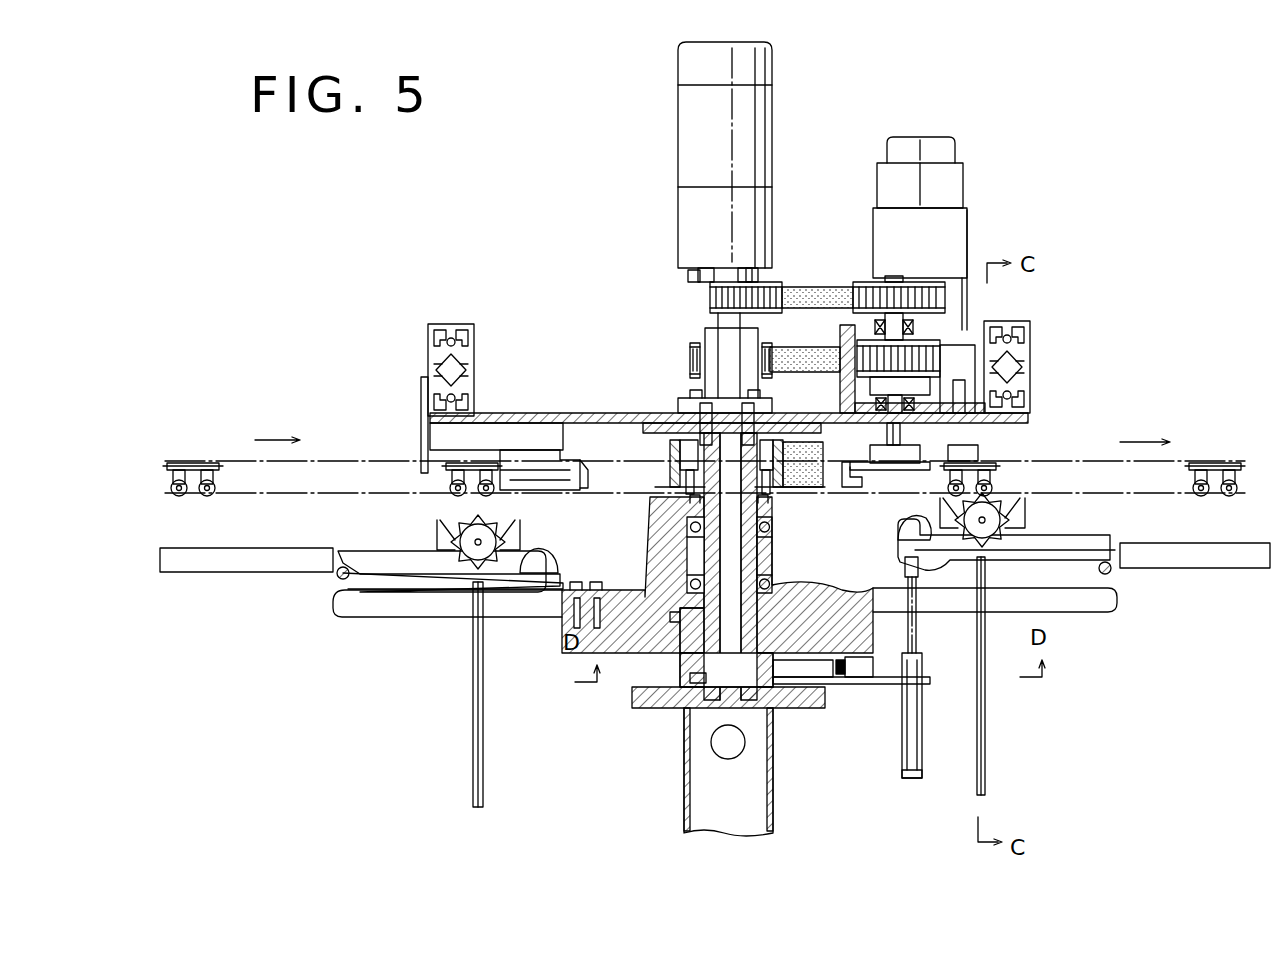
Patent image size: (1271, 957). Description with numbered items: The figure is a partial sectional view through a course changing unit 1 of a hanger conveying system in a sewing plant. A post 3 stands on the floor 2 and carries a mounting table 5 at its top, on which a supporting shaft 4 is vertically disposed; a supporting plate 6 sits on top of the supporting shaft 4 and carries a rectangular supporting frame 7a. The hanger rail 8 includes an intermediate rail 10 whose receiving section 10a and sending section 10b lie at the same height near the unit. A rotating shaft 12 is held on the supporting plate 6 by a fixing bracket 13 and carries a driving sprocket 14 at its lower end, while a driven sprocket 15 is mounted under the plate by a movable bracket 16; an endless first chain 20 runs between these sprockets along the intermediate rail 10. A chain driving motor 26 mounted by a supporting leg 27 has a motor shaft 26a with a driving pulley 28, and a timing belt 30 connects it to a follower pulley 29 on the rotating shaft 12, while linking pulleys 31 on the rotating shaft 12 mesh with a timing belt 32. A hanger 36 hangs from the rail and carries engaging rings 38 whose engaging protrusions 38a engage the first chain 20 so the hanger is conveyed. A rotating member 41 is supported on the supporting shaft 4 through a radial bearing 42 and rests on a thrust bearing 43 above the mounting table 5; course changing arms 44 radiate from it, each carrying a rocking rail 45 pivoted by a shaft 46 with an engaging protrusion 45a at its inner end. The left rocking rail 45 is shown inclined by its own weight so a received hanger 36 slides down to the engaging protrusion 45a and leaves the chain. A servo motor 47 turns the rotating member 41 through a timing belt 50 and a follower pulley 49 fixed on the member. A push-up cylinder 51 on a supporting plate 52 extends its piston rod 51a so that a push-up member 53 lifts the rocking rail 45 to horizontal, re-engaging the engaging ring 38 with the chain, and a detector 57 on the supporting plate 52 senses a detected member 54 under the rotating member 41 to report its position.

The course changing unit 1 is at (542, 389).
The floor 2 is at (943, 463).
The post 3 is at (684, 787).
The supporting shaft 4 is at (760, 542).
The mounting table 5 is at (680, 680).
The supporting plate 6 is at (587, 413).
The supporting frame 7a is at (428, 366).
The hanger rail 8 is at (175, 550).
The intermediate rail 10 is at (217, 560).
The receiving section 10a is at (292, 560).
The sending section 10b is at (1184, 568).
The rotating shaft 12 is at (888, 435).
The fixing bracket 13 is at (840, 398).
The driving sprocket 14 is at (877, 478).
The driven sprocket 15 is at (550, 491).
The movable bracket 16 is at (490, 448).
The first chain 20 is at (204, 466).
The chain driving motor 26 is at (688, 147).
The motor shaft 26a is at (755, 273).
The supporting leg 27 is at (677, 405).
The driving pulley 28 is at (700, 280).
The follower pulley 29 is at (910, 280).
The timing belt 30 is at (830, 285).
The linking pulley 31 is at (692, 351).
The timing belt 32 is at (795, 349).
The hanger 36 is at (470, 736).
The engaging ring 38 is at (455, 538).
The engaging protrusion 38a is at (456, 520).
The rotating member 41 is at (655, 555).
The radial bearing 42 is at (688, 538).
The thrust bearing 43 is at (810, 598).
The course changing arm 44 is at (420, 605).
The rocking rail 45 is at (358, 548).
The engaging protrusion 45a is at (558, 556).
The shaft 46 is at (343, 582).
The servo motor 47 is at (877, 185).
The follower pulley 49 is at (670, 450).
The timing belt 50 is at (670, 478).
The push-up cylinder 51 is at (922, 748).
The piston rod 51a is at (915, 632).
The supporting plate 52 is at (885, 685).
The push-up member 53 is at (918, 568).
The detected member 54 is at (836, 685).
The detector 57 is at (872, 663).